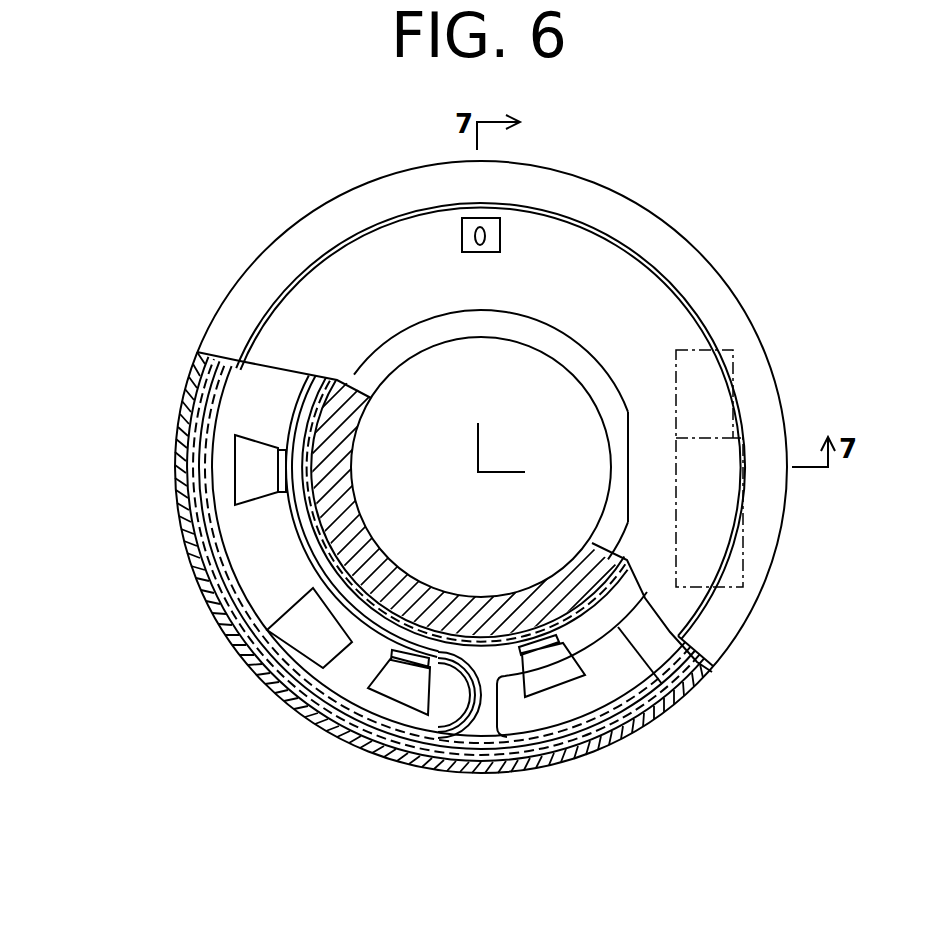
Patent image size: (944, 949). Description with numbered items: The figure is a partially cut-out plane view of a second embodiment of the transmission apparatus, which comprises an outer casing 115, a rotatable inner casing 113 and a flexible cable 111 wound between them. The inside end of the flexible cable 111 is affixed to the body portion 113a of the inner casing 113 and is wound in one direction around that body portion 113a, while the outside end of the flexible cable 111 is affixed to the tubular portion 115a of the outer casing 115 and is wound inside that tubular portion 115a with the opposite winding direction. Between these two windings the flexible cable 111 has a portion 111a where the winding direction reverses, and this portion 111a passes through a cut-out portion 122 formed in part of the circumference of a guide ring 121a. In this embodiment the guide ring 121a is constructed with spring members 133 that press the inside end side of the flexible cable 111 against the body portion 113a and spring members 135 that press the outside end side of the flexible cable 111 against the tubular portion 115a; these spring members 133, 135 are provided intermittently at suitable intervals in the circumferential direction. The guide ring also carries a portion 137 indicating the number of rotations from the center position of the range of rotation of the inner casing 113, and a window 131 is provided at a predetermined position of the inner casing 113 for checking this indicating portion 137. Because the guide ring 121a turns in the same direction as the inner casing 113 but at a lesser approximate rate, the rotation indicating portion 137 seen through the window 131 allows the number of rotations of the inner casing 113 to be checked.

The flexible cable 111 is at (512, 643).
The portion where the winding direction reverses 111a is at (457, 745).
The inner casing 113 is at (425, 297).
The body portion 113a is at (348, 500).
The outer casing 115 is at (268, 258).
The tubular portion 115a is at (177, 492).
The guide ring 121a is at (242, 558).
The cut-out portion 122 is at (484, 737).
The window 131 is at (462, 230).
The spring members 133 is at (400, 678).
The spring members 135 is at (312, 678).
The rotation indicating portion 137 is at (493, 233).